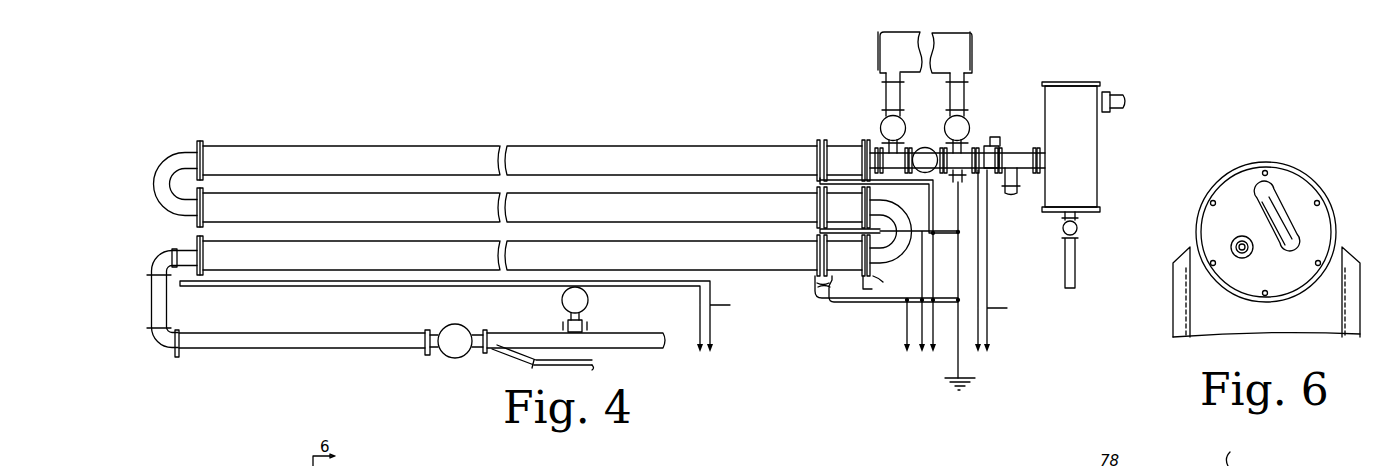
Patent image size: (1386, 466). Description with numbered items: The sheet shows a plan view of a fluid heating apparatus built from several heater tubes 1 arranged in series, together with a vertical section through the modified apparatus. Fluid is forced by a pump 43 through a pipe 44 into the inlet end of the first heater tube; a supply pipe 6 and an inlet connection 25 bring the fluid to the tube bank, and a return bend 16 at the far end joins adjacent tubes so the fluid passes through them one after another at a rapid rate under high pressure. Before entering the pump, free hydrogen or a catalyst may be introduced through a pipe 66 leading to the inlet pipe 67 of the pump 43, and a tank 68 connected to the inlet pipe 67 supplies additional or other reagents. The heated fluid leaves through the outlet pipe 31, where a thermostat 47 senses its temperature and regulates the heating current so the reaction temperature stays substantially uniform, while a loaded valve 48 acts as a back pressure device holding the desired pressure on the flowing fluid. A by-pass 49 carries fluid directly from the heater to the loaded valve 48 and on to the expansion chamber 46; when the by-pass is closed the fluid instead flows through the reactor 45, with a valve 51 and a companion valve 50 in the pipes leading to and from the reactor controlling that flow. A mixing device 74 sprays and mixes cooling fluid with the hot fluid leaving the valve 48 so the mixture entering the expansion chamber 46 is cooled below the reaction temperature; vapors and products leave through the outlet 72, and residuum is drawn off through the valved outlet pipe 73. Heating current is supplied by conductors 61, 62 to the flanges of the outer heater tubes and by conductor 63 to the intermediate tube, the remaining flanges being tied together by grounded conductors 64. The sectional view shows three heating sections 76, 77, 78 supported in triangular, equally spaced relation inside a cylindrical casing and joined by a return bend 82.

In FIG. 4, the heat exchanger tubes 1 is at (597, 242).
In FIG. 4, the supply pipe 6 is at (152, 292).
In FIG. 4, the return bend 16 is at (182, 153).
In FIG. 4, the inlet connection 25 is at (183, 242).
In FIG. 4, the outlet pipe 31 is at (880, 148).
In FIG. 4, the pump 43 is at (453, 324).
In FIG. 4, the pipe 44 is at (292, 333).
In FIG. 4, the reactor 45 is at (963, 48).
In FIG. 4, the expansion chamber 46 is at (1097, 169).
In FIG. 4, the thermostat 47 is at (956, 184).
In FIG. 4, the loaded valve 48 is at (988, 139).
In FIG. 4, the by-pass 49 is at (920, 148).
In FIG. 4, the valve 50 is at (903, 120).
In FIG. 4, the valve 51 is at (963, 118).
In FIG. 4, the conductor 61 is at (933, 332).
In FIG. 4, the conductor 62 is at (906, 309).
In FIG. 4, the conductor 63 is at (922, 322).
In FIG. 4, the conductors 64 is at (957, 353).
In FIG. 4, the pipe 66 is at (592, 372).
In FIG. 4, the inlet pipe 67 is at (499, 333).
In FIG. 4, the tank 68 is at (588, 304).
In FIG. 4, the outlet 72 is at (1127, 103).
In FIG. 4, the valved outlet pipe 73 is at (1080, 229).
In FIG. 4, the mixing device 74 is at (1007, 149).
In FIG. 6, the heating section 76 is at (1233, 241).
In FIG. 6, the heating section 77 is at (1300, 243).
In FIG. 6, the heating section 78 is at (1270, 199).
In FIG. 6, the return bend 82 is at (1290, 219).